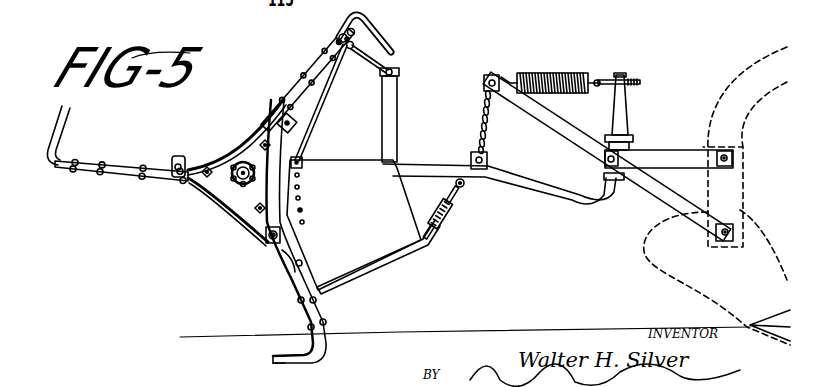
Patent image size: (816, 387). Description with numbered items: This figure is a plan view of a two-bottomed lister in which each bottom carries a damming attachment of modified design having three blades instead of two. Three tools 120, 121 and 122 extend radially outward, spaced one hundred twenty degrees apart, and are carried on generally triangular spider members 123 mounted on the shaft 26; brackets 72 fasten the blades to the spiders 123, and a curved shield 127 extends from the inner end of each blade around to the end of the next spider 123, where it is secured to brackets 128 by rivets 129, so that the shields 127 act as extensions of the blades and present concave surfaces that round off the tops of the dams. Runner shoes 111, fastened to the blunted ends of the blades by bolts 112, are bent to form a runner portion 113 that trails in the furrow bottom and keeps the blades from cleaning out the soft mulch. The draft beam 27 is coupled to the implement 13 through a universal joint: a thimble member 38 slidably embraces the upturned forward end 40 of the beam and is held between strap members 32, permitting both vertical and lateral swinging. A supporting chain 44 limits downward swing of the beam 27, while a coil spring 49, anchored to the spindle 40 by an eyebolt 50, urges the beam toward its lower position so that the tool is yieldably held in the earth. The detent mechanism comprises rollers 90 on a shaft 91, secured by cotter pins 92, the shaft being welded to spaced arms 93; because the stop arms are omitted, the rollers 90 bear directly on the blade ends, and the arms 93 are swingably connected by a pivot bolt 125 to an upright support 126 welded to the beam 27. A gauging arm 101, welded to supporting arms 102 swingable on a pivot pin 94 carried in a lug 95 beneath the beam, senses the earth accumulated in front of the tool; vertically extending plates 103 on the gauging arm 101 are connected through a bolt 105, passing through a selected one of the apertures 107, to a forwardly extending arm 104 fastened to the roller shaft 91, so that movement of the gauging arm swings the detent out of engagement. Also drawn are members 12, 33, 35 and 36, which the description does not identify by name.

The vehicle frame portion 12 is at (728, 184).
The implement 13 is at (730, 285).
The shaft 26 is at (243, 161).
The draft beam 27 is at (449, 146).
The strap members 32 is at (563, 132).
The pivot 33 is at (725, 241).
The link bar 35 is at (672, 156).
The pivot 36 is at (724, 152).
The thimble member 38 is at (633, 143).
The upturned forward end 40 is at (623, 104).
The supporting chain 44 is at (481, 108).
The coil spring 49 is at (538, 72).
The eyebolt 50 is at (641, 82).
The brackets 72 is at (160, 162).
The rollers 90 is at (358, 18).
The shaft 91 is at (336, 41).
The cotter pins 92 is at (342, 36).
The arms 93 is at (378, 63).
The pivot pin 94 is at (458, 183).
The lug 95 is at (463, 187).
The gauging arm 101 is at (398, 258).
The supporting arms 102 is at (453, 215).
The plates 103 is at (354, 225).
The forwardly extending arm 104 is at (322, 108).
The bolt 105 is at (302, 161).
The apertures 107 is at (303, 210).
The runner shoes 111 is at (57, 127).
The bolts 112 is at (101, 160).
The runner portion 113 is at (300, 362).
The tool 120 is at (126, 160).
The tool 121 is at (288, 73).
The tool 122 is at (282, 280).
The spider members 123 is at (251, 201).
The pivot bolt 125 is at (396, 64).
The upright support 126 is at (392, 118).
The curved shield 127 is at (262, 140).
The brackets 128 is at (279, 250).
The rivets 129 is at (264, 243).